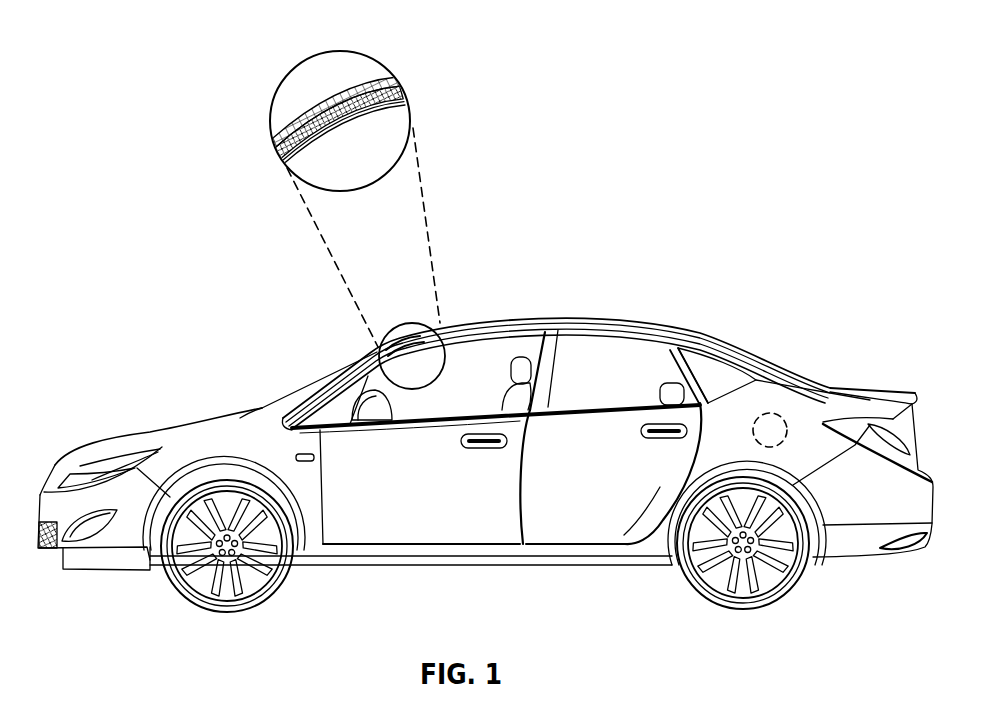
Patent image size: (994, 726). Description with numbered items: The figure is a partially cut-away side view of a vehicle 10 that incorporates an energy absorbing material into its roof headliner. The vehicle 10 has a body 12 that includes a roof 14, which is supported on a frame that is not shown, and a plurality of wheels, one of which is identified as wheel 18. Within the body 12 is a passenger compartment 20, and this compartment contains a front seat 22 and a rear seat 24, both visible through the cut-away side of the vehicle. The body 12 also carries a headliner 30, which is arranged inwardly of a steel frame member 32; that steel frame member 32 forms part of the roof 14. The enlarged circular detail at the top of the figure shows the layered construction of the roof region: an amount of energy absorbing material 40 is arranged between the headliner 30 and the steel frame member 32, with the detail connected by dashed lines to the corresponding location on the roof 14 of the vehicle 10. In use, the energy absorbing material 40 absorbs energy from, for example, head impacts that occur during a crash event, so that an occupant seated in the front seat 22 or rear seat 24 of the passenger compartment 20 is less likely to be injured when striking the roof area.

The vehicle 10 is at (264, 312).
The body 12 is at (228, 410).
The roof 14 is at (470, 319).
The wheel 18 is at (267, 590).
The passenger compartment 20 is at (393, 408).
The front seat 22 is at (513, 400).
The rear seat 24 is at (693, 363).
The headliner 30 is at (358, 142).
The steel frame member 32 is at (340, 95).
The energy absorbing material 40 is at (404, 93).